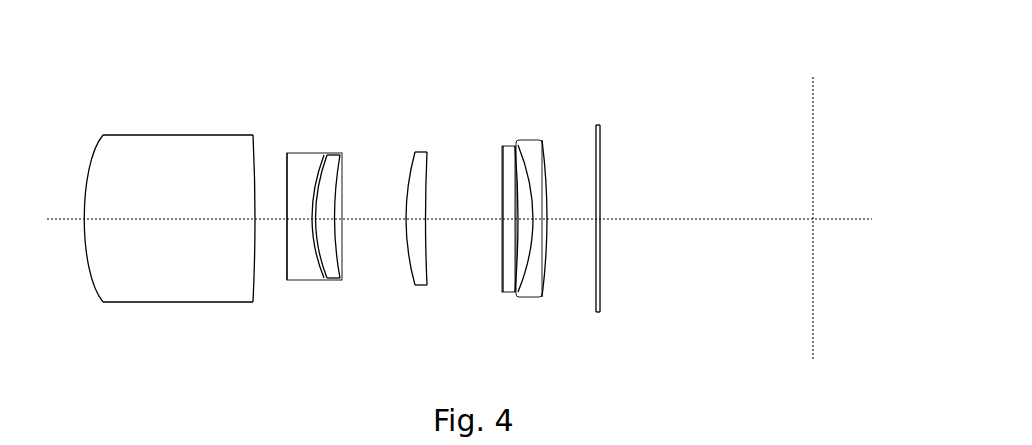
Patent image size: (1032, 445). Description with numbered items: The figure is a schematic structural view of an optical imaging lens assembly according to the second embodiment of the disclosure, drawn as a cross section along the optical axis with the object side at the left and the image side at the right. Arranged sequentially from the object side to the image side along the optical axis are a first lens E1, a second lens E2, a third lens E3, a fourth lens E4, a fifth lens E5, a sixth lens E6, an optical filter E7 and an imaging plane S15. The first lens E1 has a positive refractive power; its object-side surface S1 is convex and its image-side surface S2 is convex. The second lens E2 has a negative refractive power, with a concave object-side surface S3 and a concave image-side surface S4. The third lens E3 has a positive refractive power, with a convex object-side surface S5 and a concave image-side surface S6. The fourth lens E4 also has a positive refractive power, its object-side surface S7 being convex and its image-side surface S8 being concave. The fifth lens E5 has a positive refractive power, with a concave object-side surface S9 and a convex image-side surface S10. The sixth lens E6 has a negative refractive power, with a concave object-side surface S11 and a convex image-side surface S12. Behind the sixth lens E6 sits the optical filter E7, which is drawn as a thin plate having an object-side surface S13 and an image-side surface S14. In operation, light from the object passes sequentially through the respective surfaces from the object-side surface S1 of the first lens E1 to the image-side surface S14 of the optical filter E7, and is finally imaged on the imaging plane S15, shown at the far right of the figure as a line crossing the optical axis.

The first lens E1 is at (151, 207).
The second lens E2 is at (276, 207).
The third lens E3 is at (306, 207).
The fourth lens E4 is at (394, 207).
The fifth lens E5 is at (489, 207).
The sixth lens E6 is at (545, 207).
The optical filter E7 is at (632, 207).
The object-side surface of the first lens S1 is at (86, 219).
The image-side surface of the first lens S2 is at (255, 219).
The object-side surface of the second lens S3 is at (287, 219).
The image-side surface of the second lens S4 is at (313, 219).
The object-side surface of the third lens S5 is at (316, 219).
The image-side surface of the third lens S6 is at (334, 219).
The object-side surface of the fourth lens S7 is at (405, 219).
The image-side surface of the fourth lens S8 is at (424, 219).
The object-side surface of the fifth lens S9 is at (503, 219).
The image-side surface of the fifth lens S10 is at (517, 219).
The object-side surface of the sixth lens S11 is at (533, 219).
The image-side surface of the sixth lens S12 is at (547, 219).
The object-side surface of the optical filter S13 is at (597, 219).
The image-side surface of the optical filter S14 is at (600, 219).
The imaging plane S15 is at (813, 219).